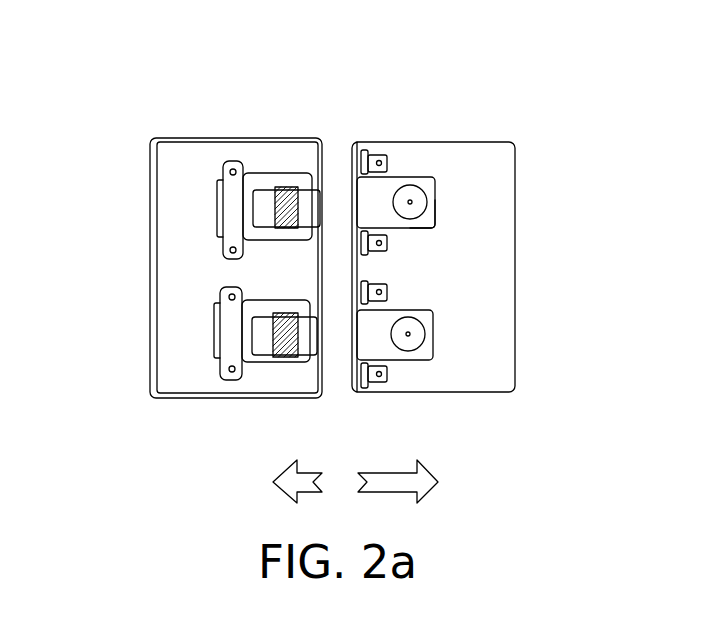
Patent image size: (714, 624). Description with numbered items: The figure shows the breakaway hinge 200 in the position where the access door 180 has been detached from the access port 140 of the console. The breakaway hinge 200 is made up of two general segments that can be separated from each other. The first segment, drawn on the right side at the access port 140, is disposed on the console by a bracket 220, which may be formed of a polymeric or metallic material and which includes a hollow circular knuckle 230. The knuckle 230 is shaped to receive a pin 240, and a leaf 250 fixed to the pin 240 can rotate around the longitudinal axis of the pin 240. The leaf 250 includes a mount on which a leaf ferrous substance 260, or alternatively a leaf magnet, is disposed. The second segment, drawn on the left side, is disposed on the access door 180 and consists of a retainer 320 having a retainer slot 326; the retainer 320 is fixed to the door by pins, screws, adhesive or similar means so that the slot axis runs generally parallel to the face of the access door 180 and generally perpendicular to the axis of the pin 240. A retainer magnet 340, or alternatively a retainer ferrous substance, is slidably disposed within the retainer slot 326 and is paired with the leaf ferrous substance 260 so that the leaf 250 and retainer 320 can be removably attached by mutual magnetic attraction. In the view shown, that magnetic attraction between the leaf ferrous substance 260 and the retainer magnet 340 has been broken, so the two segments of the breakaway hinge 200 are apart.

The access port 140 is at (492, 162).
The access door 180 is at (168, 178).
The breakaway hinge 200 is at (328, 232).
The bracket 220 is at (357, 152).
The knuckle 230 is at (372, 150).
The pin 240 is at (368, 173).
The leaf 250 is at (425, 222).
The leaf ferrous substance 260 is at (405, 208).
The retainer 320 is at (232, 219).
The retainer slot 326 is at (262, 210).
The retainer magnet 340 is at (290, 213).